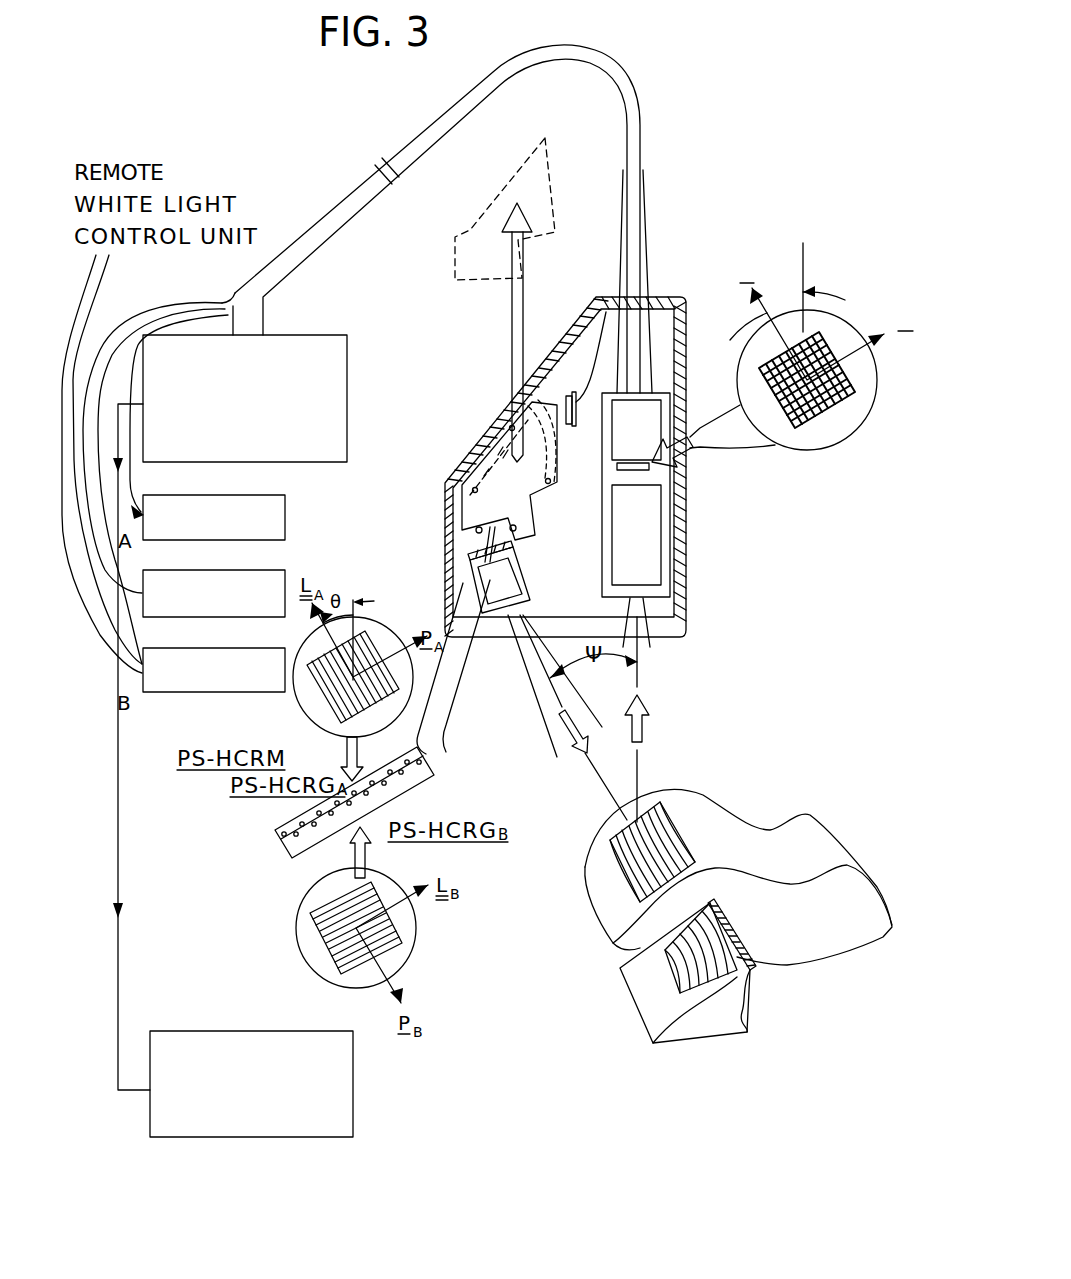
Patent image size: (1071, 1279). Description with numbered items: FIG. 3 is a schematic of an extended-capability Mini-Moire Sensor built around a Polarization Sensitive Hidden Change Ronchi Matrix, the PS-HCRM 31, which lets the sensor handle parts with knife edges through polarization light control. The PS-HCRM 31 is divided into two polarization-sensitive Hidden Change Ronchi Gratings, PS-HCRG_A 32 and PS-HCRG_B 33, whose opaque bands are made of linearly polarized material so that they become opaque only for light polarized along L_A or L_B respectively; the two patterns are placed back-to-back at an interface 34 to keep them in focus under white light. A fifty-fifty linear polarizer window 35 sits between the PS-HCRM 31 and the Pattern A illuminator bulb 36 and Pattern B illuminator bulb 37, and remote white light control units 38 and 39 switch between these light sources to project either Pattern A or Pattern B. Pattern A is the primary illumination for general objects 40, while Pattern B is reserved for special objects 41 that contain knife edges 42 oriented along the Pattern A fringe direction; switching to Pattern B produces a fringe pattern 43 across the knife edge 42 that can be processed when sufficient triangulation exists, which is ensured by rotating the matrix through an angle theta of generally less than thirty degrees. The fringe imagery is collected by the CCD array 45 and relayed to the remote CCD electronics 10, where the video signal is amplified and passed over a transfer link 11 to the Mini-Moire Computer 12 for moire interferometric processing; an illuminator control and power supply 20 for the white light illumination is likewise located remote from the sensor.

The remote CCD electronics 10 is at (305, 335).
The signal cable 11 is at (124, 907).
The mini-moire computer 12 is at (353, 1090).
The illuminator control and power supply 20 is at (286, 572).
The PS-HCRM 31 is at (474, 560).
The PS-HCRG_A 32 is at (276, 835).
The PS-HCRG_B 33 is at (290, 852).
The interface 34 is at (436, 762).
The linear polarizer 50%/50% window 35 is at (470, 535).
The Pattern A illuminator bulb 36 is at (478, 492).
The Pattern B illuminator bulb 37 is at (505, 445).
The remote white light control unit 38 is at (286, 515).
The remote white light control unit 39 is at (233, 693).
The general objects 40 is at (610, 893).
The special objects 41 is at (650, 998).
The knife edge 42 is at (746, 1000).
The fringe pattern 43 is at (748, 958).
The CCD array 45 is at (650, 462).